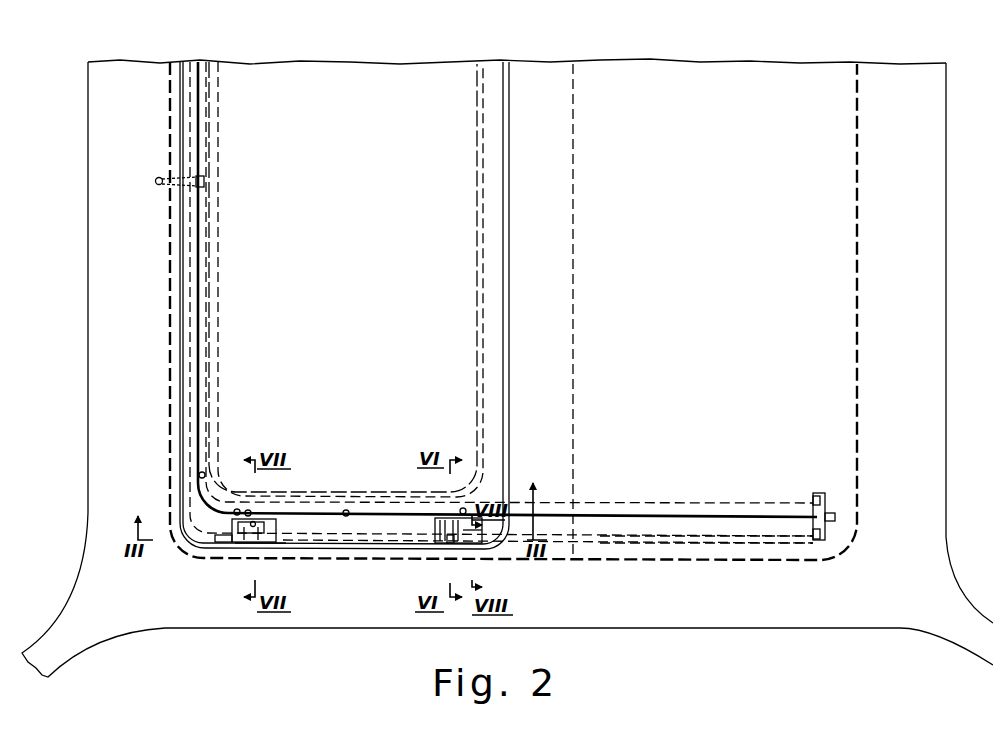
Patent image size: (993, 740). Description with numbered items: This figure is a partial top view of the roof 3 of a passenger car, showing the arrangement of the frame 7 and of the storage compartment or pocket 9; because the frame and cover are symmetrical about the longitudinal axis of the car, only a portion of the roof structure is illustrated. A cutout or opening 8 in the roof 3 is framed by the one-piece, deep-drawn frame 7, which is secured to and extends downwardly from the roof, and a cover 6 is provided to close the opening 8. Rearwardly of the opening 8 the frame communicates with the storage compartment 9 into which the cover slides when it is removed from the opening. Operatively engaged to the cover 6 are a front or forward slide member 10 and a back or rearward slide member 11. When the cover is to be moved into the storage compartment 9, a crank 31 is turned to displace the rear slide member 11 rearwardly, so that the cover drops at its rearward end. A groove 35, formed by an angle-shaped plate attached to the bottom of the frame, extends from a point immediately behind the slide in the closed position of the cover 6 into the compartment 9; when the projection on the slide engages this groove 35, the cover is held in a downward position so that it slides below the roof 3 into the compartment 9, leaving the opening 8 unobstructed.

The roof 3 is at (935, 314).
The cover 6 is at (362, 228).
The frame 7 is at (221, 338).
The opening 8 is at (508, 61).
The storage compartment 9 is at (858, 309).
The front slide member 10 is at (243, 545).
The rear slide member 11 is at (443, 538).
The crank 31 is at (155, 181).
The groove 35 is at (648, 538).